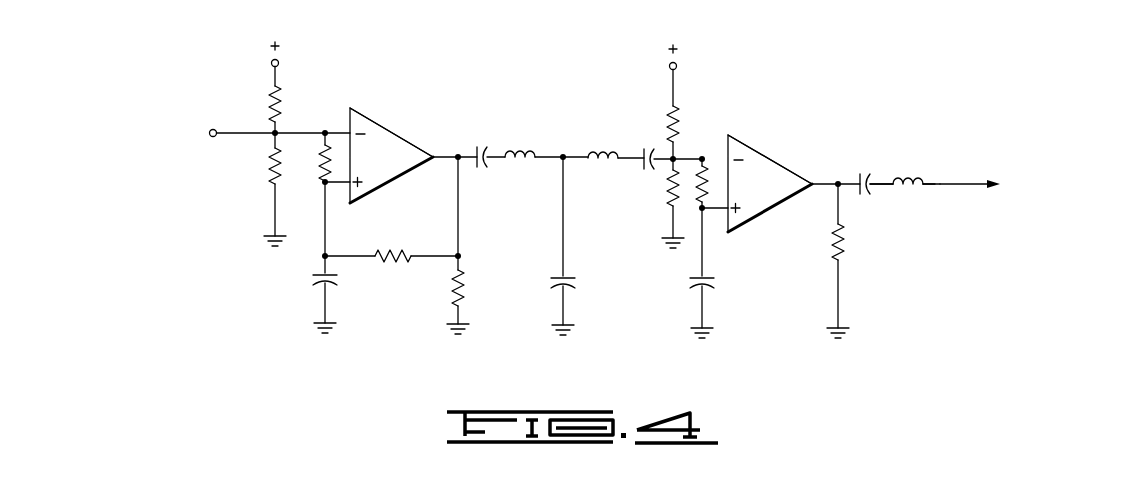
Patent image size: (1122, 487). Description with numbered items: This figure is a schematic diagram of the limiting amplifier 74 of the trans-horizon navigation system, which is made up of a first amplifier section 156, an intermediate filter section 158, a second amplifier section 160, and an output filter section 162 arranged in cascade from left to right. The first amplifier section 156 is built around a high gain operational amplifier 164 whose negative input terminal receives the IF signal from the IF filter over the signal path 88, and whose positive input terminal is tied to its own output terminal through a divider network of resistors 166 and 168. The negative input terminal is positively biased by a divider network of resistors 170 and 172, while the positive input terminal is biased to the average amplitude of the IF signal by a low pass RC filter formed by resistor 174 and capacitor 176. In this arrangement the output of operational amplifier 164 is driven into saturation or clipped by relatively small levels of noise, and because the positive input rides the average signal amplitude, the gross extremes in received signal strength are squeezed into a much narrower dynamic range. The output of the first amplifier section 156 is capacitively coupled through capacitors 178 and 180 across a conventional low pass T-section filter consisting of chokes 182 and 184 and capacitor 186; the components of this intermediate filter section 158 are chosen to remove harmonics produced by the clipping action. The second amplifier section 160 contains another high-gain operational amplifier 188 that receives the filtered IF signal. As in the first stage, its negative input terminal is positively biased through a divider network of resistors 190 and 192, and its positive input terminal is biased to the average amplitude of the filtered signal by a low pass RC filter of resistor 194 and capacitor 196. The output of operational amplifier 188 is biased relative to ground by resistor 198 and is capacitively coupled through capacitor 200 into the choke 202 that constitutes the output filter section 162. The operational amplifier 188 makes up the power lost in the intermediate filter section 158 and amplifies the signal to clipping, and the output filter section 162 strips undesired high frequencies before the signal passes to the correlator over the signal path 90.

The limiting amplifier 74 is at (445, 85).
The signal path 88 is at (240, 128).
The signal path 90 is at (946, 181).
The first amplifier section 156 is at (359, 104).
The intermediate filter section 158 is at (558, 135).
The second amplifier section 160 is at (757, 130).
The output filter section 162 is at (906, 148).
The operational amplifier 164 is at (393, 126).
The resistor 166 is at (268, 95).
The resistor 168 is at (265, 165).
The resistor 170 is at (400, 249).
The resistor 172 is at (463, 291).
The resistor 174 is at (321, 163).
The capacitor 176 is at (317, 272).
The capacitor 178 is at (473, 150).
The capacitor 180 is at (645, 139).
The choke 182 is at (504, 164).
The choke 184 is at (592, 165).
The capacitor 186 is at (570, 277).
The operational amplifier 188 is at (769, 153).
The resistor 190 is at (666, 114).
The resistor 192 is at (667, 192).
The resistor 194 is at (703, 176).
The capacitor 196 is at (711, 280).
The resistor 198 is at (847, 244).
The capacitor 200 is at (856, 167).
The choke 202 is at (897, 189).